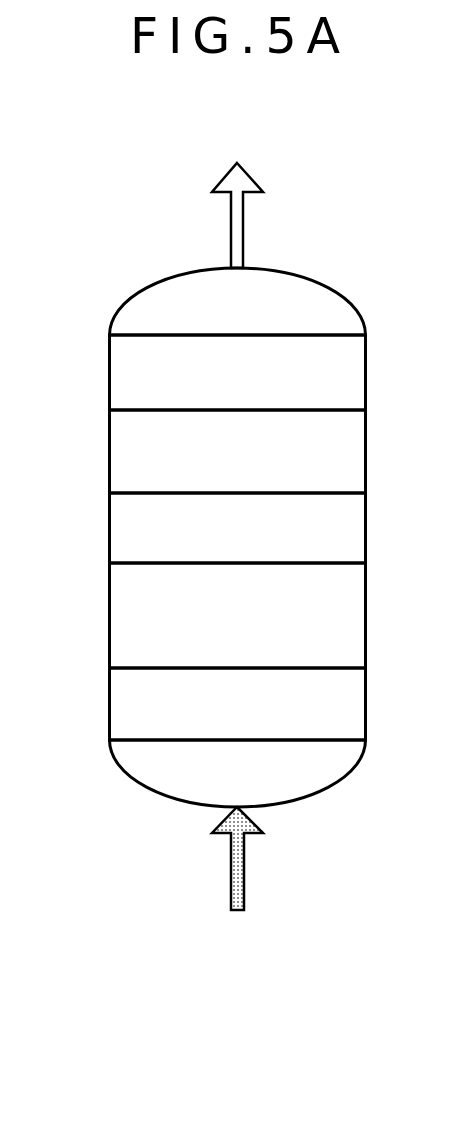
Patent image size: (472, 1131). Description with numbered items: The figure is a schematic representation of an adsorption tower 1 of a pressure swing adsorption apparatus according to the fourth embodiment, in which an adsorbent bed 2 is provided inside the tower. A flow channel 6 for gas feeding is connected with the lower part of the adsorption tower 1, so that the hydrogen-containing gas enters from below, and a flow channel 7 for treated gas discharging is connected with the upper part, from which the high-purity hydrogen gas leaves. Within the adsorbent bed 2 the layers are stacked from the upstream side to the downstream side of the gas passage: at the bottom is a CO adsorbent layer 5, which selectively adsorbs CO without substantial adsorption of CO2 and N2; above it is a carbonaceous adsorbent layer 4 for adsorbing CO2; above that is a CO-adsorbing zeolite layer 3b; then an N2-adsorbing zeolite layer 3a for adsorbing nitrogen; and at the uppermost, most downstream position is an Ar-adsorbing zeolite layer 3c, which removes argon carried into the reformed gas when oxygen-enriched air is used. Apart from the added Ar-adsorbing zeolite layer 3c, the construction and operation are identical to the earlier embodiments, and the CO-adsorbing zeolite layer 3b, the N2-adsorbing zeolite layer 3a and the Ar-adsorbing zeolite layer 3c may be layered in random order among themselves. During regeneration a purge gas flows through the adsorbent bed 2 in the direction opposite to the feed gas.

The adsorption tower 1 is at (97, 394).
The adsorbent bed 2 is at (246, 449).
The N2-adsorbing zeolite layer 3a is at (358, 452).
The CO-adsorbing zeolite layer 3b is at (358, 543).
The Ar-adsorbing zeolite layer 3c is at (358, 378).
The carbonaceous adsorbent layer 4 is at (358, 632).
The CO adsorbent layer 5 is at (358, 713).
The flow channel for oxydant gas feeding 6 is at (244, 858).
The flow channel for treated gas discharging 7 is at (243, 219).